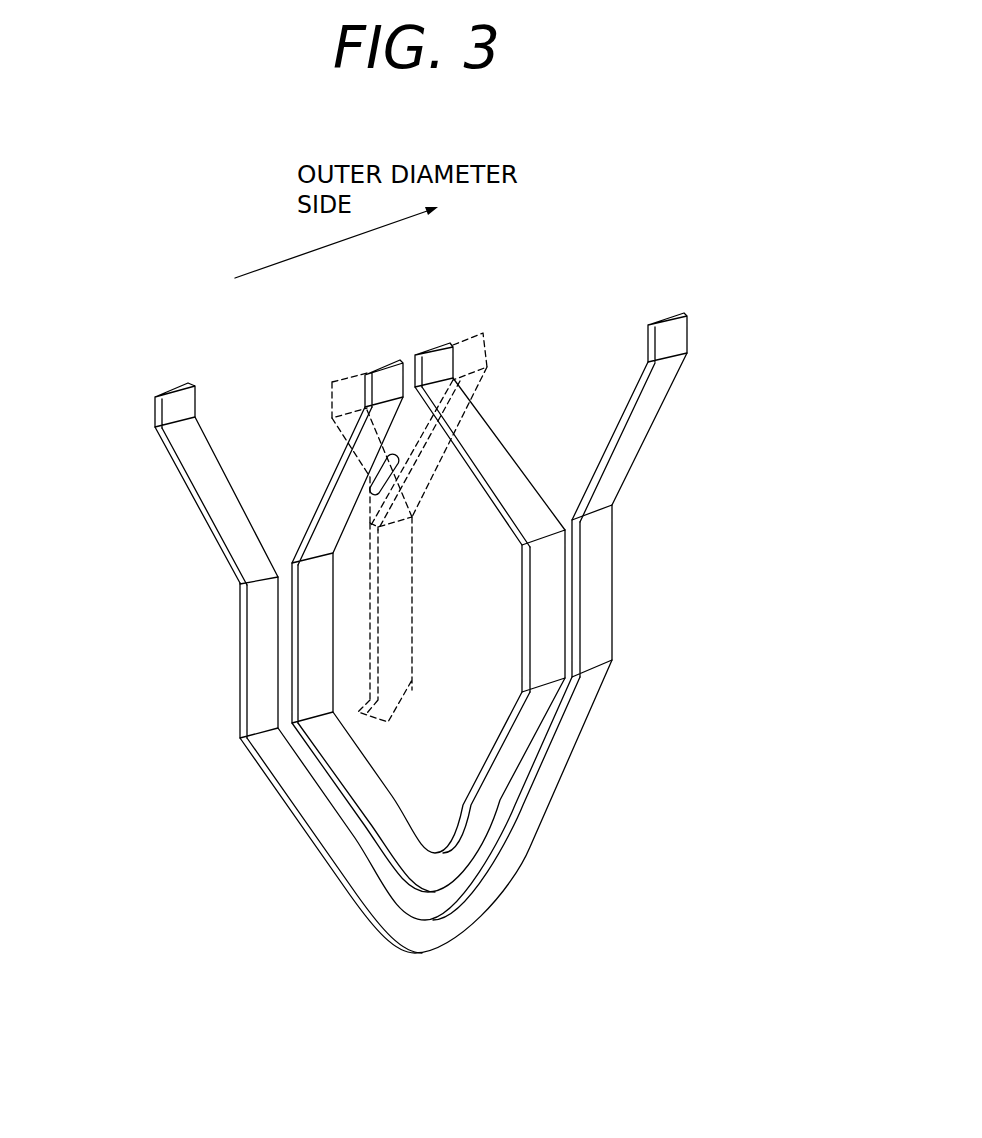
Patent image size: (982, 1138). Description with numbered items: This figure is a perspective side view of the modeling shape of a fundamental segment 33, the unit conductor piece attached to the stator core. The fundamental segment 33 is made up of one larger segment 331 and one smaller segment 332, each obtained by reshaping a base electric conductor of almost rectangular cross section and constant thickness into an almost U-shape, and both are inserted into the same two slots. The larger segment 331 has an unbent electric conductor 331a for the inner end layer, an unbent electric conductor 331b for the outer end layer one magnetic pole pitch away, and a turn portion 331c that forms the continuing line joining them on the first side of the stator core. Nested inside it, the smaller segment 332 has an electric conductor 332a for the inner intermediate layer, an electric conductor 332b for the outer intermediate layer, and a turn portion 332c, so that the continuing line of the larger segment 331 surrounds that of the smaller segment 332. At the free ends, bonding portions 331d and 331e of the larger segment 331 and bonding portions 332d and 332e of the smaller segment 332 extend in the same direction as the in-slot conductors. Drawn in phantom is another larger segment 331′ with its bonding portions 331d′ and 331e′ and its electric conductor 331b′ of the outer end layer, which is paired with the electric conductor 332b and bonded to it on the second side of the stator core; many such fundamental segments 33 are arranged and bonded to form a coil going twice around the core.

The fundamental segment 33 is at (320, 917).
The larger segment 331 is at (637, 473).
The electric conductor 331a is at (260, 627).
The electric conductor 331b is at (600, 578).
The turn portion 331c is at (418, 940).
The bonding portion 331d is at (177, 413).
The bonding portion 331e is at (677, 343).
The larger segment 331′ is at (425, 627).
The electric conductor 331b′ is at (398, 598).
The bonding portion 331d′ is at (348, 397).
The bonding portion 331e′ is at (480, 350).
The smaller segment 332 is at (543, 493).
The electric conductor 332a is at (315, 673).
The electric conductor 332b is at (550, 638).
The turn portion 332c is at (437, 873).
The bonding portion 332d is at (394, 380).
The bonding portion 332e is at (437, 358).